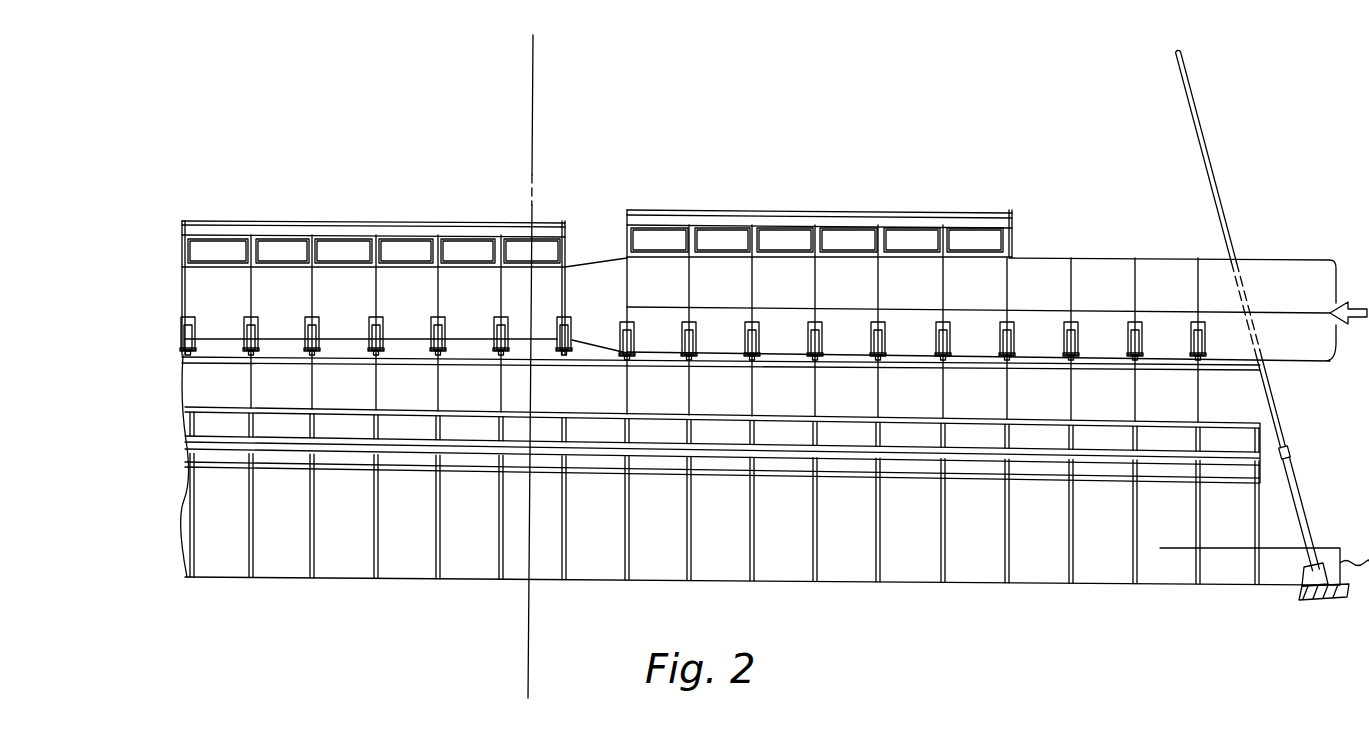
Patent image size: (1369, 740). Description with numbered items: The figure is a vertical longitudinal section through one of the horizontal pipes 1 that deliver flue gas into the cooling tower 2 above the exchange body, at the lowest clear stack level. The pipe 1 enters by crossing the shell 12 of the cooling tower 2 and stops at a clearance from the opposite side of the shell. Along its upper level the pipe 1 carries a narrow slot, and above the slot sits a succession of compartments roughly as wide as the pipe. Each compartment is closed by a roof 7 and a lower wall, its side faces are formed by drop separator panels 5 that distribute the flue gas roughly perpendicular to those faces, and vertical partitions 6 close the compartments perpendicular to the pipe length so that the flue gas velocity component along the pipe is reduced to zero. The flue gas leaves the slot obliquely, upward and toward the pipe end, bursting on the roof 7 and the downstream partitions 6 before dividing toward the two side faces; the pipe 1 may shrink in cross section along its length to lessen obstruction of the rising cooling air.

The horizontal pipe 1 is at (1102, 246).
The cooling tower 2 is at (1262, 325).
The drop separator panels 5 is at (410, 248).
The vertical partitions 6 is at (374, 257).
The roof 7 is at (302, 228).
The shell 12 is at (1275, 402).